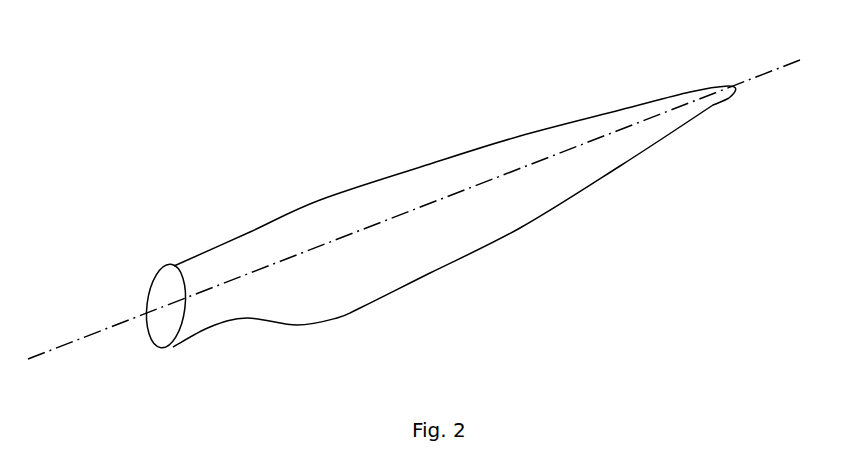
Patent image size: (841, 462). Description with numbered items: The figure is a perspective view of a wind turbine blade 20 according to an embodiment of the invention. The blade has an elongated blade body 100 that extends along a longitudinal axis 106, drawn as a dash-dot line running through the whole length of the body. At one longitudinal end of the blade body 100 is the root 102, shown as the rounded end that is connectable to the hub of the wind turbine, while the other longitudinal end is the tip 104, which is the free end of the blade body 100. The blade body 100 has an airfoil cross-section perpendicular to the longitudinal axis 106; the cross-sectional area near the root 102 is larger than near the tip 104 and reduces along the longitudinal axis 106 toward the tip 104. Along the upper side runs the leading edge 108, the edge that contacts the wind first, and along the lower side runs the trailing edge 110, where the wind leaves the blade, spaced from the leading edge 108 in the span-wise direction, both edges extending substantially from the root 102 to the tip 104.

The wind turbine blade 20 is at (231, 78).
The blade body 100 is at (423, 147).
The root 102 is at (197, 272).
The tip 104 is at (713, 105).
The longitudinal axis 106 is at (768, 72).
The leading edge 108 is at (338, 193).
The trailing edge 110 is at (495, 242).